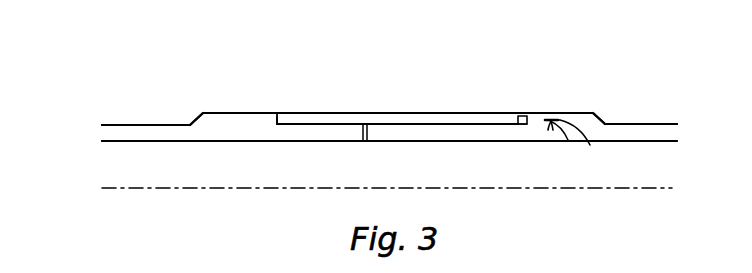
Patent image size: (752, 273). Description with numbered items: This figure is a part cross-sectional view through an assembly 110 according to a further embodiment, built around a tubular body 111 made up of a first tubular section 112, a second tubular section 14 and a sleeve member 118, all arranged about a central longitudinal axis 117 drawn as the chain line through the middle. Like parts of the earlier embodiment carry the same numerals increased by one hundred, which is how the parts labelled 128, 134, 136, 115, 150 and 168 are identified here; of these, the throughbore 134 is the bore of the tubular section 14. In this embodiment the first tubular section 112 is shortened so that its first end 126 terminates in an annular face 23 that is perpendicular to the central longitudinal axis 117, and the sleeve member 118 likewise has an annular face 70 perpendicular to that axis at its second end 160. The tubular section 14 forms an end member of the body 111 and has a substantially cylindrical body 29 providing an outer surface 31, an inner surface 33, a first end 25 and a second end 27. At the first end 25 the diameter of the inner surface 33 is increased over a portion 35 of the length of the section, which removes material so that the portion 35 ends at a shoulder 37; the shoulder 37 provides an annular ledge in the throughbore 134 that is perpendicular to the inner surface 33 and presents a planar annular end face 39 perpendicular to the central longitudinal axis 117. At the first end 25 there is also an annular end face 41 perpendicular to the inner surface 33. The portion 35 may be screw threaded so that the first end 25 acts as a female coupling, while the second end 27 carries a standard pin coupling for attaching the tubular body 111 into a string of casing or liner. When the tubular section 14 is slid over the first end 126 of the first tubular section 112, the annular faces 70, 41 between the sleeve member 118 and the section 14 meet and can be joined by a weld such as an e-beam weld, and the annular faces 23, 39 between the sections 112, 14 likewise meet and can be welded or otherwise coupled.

The assembly 110 is at (556, 73).
The tubular body 111 is at (109, 167).
The first tubular section 112 is at (213, 112).
The first planar surface 128 is at (144, 134).
The throughbore 134 is at (243, 178).
The central longitudinal axis 117 is at (297, 190).
The sleeve member 118 is at (410, 117).
The second end 160 is at (473, 118).
The end wall 168 is at (279, 118).
The edge 136 is at (268, 118).
The top surface 115 is at (265, 114).
The second end 27 is at (277, 125).
The post 150 is at (361, 128).
The annular face 70 is at (518, 120).
The annular end face 41 is at (518, 125).
The first end 25 is at (538, 112).
The annular face 23 is at (547, 121).
The shoulder 37 is at (548, 128).
The first end 126 is at (551, 124).
The annular end face 39 is at (565, 135).
The portion 35 is at (590, 145).
The tubular section 14 is at (578, 113).
The outer surface 31 is at (648, 123).
The cylindrical body 29 is at (601, 133).
The inner surface 33 is at (645, 141).